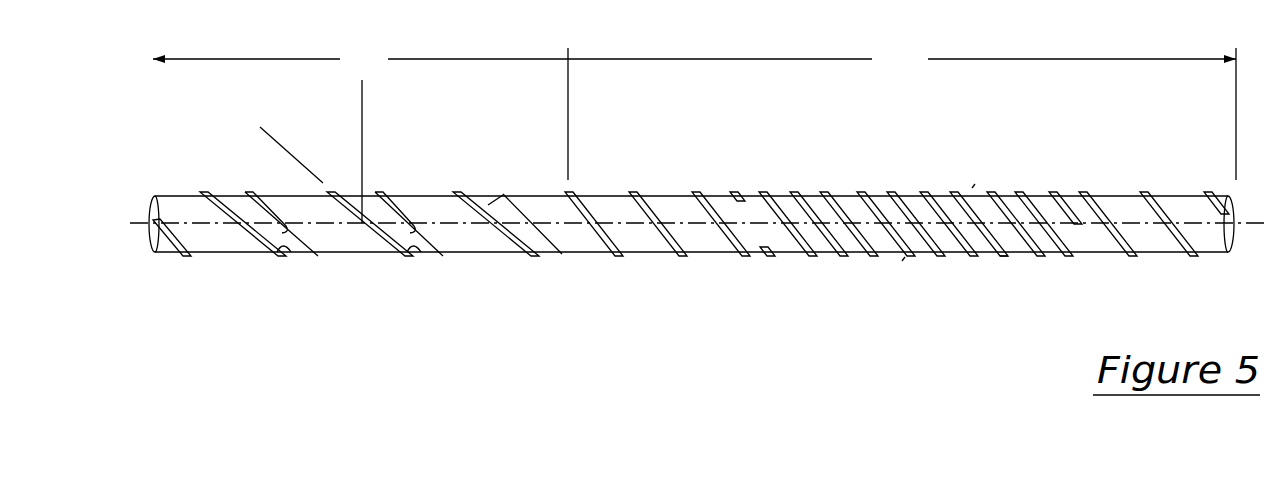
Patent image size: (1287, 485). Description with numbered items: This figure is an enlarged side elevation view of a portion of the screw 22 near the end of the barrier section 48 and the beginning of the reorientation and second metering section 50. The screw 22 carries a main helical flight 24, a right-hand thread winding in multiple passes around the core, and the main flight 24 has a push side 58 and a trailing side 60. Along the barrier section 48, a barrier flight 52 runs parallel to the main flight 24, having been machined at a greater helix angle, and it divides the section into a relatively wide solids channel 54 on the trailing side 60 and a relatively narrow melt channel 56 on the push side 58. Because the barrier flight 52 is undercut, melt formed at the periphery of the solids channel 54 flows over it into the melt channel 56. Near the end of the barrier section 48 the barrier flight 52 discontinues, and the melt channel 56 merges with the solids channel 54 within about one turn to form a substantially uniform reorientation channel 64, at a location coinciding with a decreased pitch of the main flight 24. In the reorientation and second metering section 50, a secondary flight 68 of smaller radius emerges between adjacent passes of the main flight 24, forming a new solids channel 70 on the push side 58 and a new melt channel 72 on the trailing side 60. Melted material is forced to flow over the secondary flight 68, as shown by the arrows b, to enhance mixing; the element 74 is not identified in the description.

The screw 22 is at (193, 285).
The main helical flight 24 is at (206, 192).
The barrier section 48 is at (360, 111).
The reorientation and second metering section 50 is at (902, 110).
The barrier flight 52 is at (249, 192).
The solids channel 54 is at (373, 253).
The melt channel 56 is at (290, 253).
The push side 58 is at (488, 196).
The trailing side 60 is at (444, 193).
The reorientation channel 64 is at (640, 253).
The secondary flight 68 is at (797, 193).
The new solids channel 70 is at (957, 255).
The new melt channel 72 is at (973, 256).
The flight 74 is at (920, 254).
The arrows b is at (973, 186).